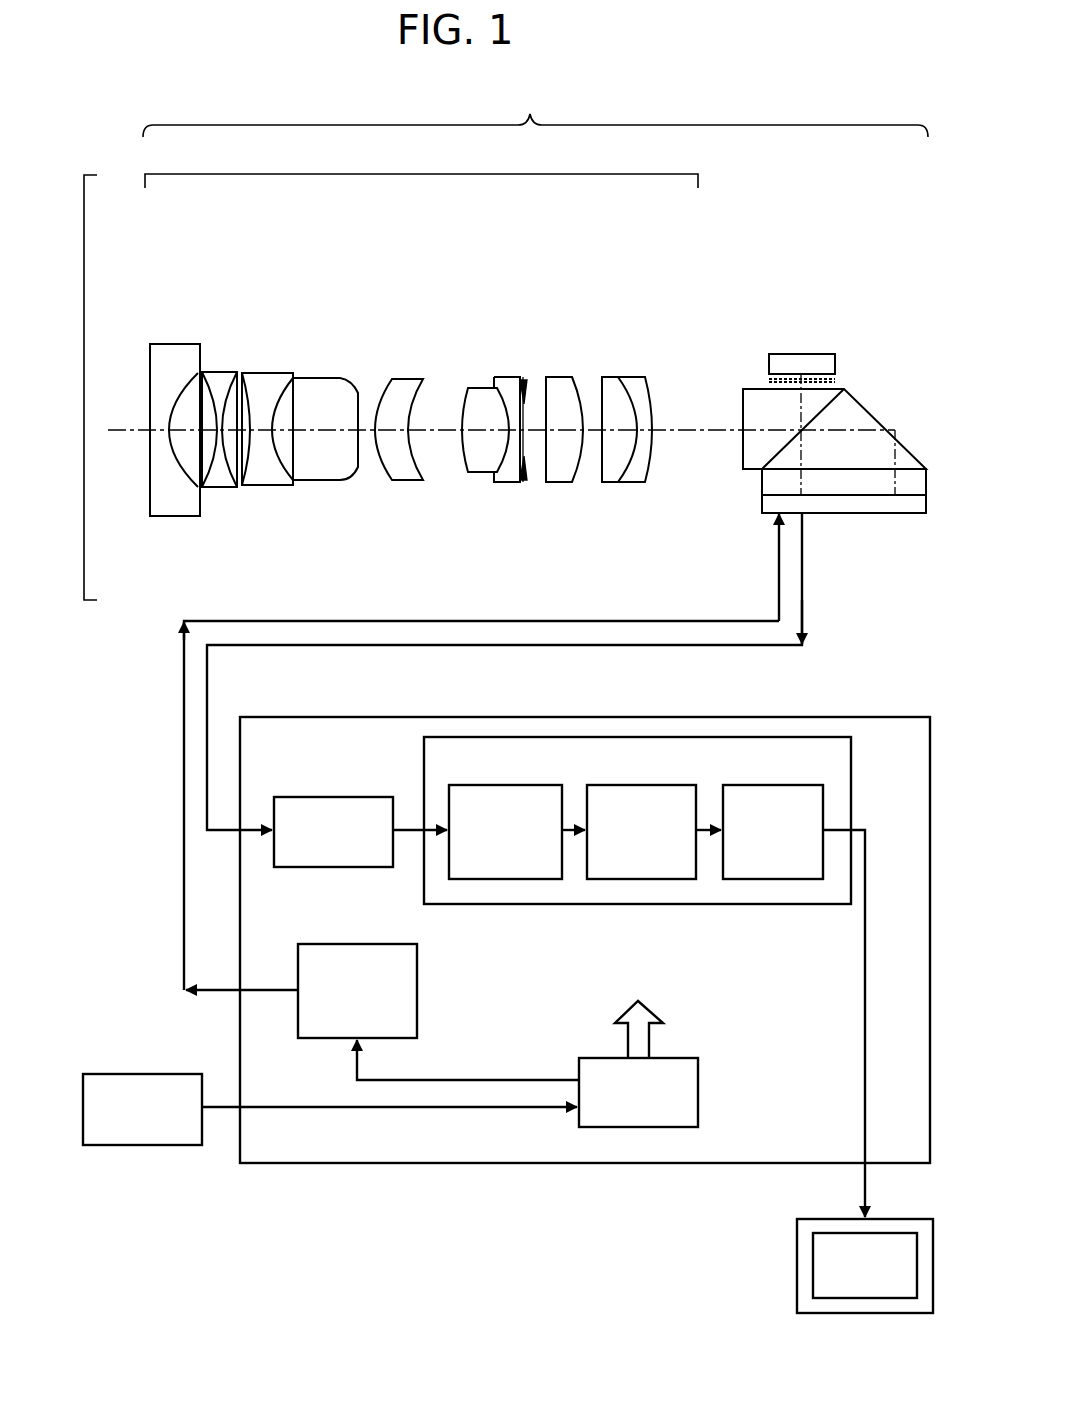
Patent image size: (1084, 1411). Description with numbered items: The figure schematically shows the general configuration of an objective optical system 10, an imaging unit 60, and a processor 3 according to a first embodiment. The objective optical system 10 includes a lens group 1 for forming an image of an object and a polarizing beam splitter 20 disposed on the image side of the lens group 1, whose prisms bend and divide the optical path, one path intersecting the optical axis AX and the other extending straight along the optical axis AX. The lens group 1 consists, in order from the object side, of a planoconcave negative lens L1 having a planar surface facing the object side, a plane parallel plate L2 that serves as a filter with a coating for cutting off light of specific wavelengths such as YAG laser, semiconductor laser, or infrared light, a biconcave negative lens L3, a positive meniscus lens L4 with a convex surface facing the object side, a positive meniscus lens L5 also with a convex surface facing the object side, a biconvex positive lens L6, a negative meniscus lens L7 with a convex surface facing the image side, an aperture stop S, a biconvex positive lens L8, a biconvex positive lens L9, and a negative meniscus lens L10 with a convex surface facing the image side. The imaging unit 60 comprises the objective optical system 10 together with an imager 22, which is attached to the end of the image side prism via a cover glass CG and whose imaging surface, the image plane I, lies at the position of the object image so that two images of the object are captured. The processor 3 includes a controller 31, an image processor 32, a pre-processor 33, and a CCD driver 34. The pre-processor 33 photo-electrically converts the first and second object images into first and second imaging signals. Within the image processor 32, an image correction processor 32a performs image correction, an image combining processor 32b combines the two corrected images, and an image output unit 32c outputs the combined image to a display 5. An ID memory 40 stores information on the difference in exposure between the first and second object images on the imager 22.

The objective optical system 10 is at (535, 110).
The lens group 1 is at (421, 165).
The imaging unit 60 is at (69, 387).
The polarizing beam splitter 20 is at (884, 357).
The imager 22 is at (906, 514).
The cover glass CG is at (762, 481).
The image plane I is at (847, 492).
The aperture stop S is at (523, 378).
The optical axis AX is at (122, 430).
The processor 3 is at (862, 717).
The pre-processor 33 is at (336, 797).
The image processor 32 is at (851, 765).
The image correction processor 32a is at (500, 786).
The image combining processor 32b is at (636, 786).
The image output unit 32c is at (768, 786).
The CCD driver 34 is at (356, 944).
The controller 31 is at (678, 1058).
The ID memory 40 is at (148, 1074).
The display 5 is at (940, 1206).
The planoconcave negative lens L1 is at (175, 351).
The plane parallel plate L2 is at (224, 336).
The biconcave negative lens L3 is at (271, 335).
The positive meniscus lens L4 is at (325, 333).
The positive meniscus lens L5 is at (399, 333).
The biconvex positive lens L6 is at (473, 329).
The negative meniscus lens L7 is at (495, 334).
The biconvex positive lens L8 is at (567, 334).
The biconvex positive lens L9 is at (619, 334).
The negative meniscus lens L10 is at (652, 334).